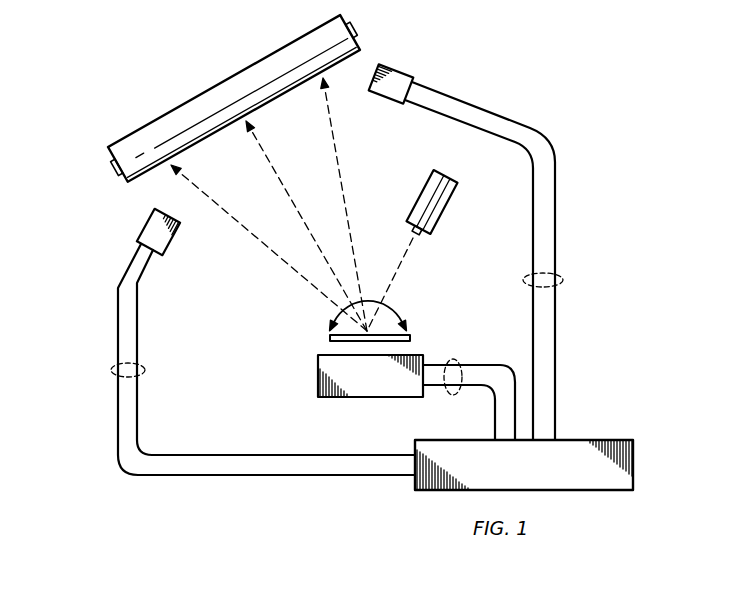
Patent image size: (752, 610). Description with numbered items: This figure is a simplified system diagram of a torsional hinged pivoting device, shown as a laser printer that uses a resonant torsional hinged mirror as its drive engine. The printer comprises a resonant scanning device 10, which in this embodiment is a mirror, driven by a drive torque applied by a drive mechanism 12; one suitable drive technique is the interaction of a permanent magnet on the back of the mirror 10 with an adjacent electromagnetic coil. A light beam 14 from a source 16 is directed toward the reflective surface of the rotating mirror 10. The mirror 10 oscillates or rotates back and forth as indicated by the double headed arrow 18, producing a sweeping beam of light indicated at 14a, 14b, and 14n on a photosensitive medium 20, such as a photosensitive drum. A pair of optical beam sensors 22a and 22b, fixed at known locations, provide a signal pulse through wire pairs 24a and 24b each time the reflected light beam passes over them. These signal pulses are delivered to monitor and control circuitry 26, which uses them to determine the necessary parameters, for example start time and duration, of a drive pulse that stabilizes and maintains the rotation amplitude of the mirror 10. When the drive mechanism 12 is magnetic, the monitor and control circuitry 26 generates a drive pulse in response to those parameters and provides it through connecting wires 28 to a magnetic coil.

The resonant scanning device 10 is at (330, 337).
The drive mechanism 12 is at (318, 375).
The light beam 14 is at (406, 259).
The sweeping beam of light 14a is at (341, 163).
The sweeping beam of light 14b is at (265, 152).
The sweeping beam of light 14n is at (267, 248).
The source 16 is at (443, 208).
The double headed arrow 18 is at (400, 308).
The photosensitive medium 20 is at (197, 97).
The optical beam sensor 22a is at (146, 224).
The optical beam sensor 22b is at (391, 66).
The wire pair 24a is at (110, 367).
The wire pair 24b is at (564, 280).
The monitor and control circuitry 26 is at (580, 440).
The connecting wires 28 is at (450, 360).